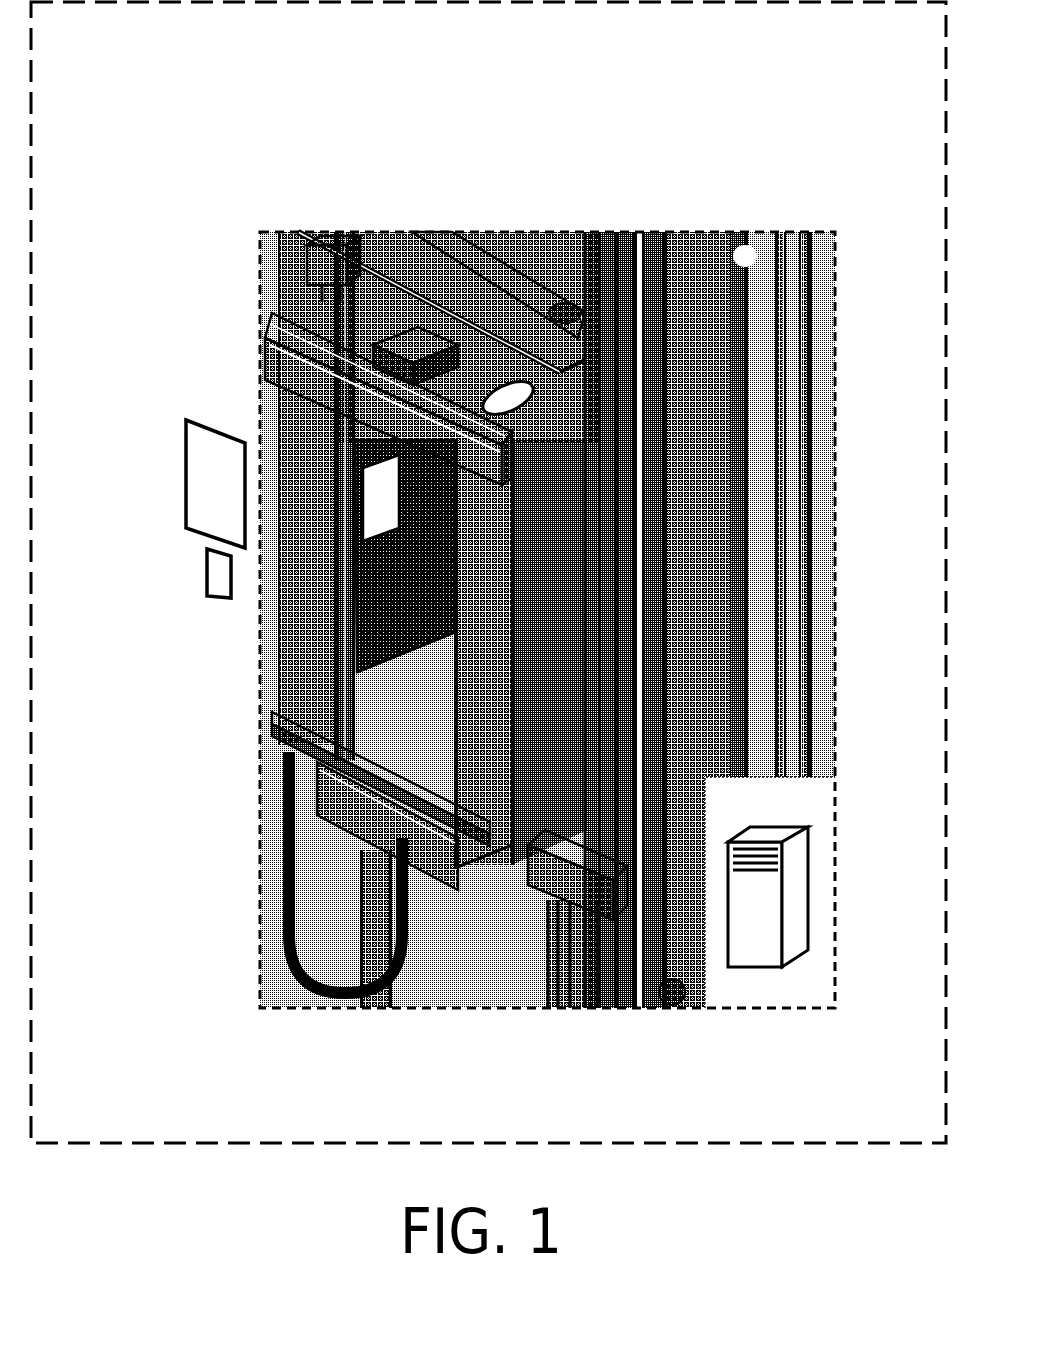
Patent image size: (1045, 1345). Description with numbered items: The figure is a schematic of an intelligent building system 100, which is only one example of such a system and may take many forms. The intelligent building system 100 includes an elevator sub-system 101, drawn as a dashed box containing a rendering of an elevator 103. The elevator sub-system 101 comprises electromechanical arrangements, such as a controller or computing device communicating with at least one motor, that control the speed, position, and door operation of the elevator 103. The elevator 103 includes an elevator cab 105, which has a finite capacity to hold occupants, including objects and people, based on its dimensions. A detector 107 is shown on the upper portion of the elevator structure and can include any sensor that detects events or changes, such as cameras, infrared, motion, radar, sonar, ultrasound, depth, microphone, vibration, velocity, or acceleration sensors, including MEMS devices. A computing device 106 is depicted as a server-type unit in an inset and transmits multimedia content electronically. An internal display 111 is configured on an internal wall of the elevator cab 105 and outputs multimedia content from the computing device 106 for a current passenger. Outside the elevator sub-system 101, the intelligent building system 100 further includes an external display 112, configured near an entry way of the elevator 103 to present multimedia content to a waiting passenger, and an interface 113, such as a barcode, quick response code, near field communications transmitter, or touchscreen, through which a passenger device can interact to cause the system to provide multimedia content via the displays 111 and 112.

The intelligent building system 100 is at (661, 50).
The elevator sub-system 101 is at (477, 576).
The elevator 103 is at (286, 331).
The elevator cab 105 is at (395, 686).
The computing device 106 is at (770, 968).
The detector 107 is at (497, 408).
The internal display 111 is at (350, 562).
The external display 112 is at (186, 457).
The interface 113 is at (205, 578).